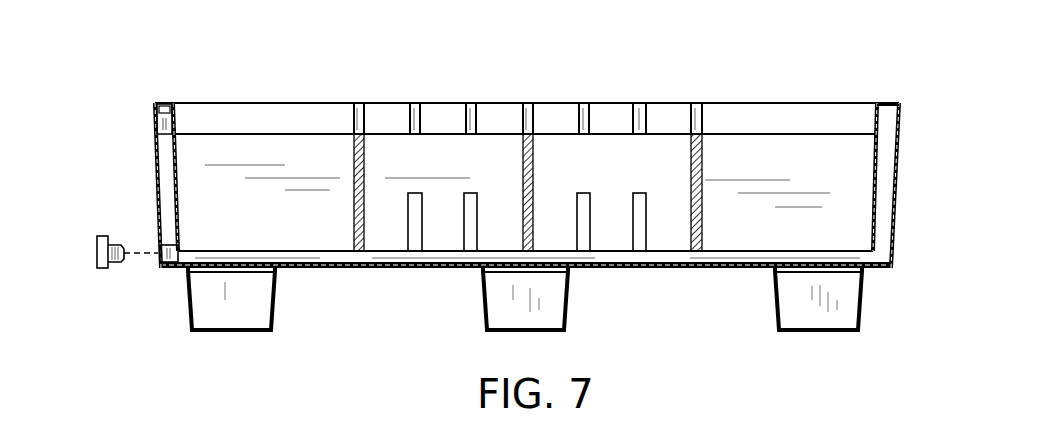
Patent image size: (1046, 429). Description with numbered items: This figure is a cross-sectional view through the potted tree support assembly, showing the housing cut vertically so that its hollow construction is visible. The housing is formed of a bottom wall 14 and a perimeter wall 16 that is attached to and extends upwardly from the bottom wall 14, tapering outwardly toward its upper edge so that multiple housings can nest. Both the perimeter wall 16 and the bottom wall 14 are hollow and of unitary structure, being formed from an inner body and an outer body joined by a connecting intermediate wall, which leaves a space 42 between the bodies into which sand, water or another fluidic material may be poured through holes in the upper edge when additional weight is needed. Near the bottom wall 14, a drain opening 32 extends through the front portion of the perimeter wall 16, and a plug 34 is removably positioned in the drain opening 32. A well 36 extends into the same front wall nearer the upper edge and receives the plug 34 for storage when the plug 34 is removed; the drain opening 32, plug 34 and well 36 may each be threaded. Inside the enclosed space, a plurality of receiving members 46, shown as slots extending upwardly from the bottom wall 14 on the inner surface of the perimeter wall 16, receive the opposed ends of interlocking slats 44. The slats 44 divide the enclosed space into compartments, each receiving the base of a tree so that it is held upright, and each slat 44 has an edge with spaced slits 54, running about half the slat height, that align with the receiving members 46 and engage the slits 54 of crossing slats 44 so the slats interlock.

The bottom wall 14 is at (353, 282).
The perimeter wall 16 is at (150, 180).
The drain opening 32 is at (162, 261).
The plug 34 is at (103, 268).
The well 36 is at (167, 101).
The space 42 is at (887, 155).
The slats 44 is at (356, 158).
The receiving members 46 is at (696, 110).
The slits 54 is at (411, 222).